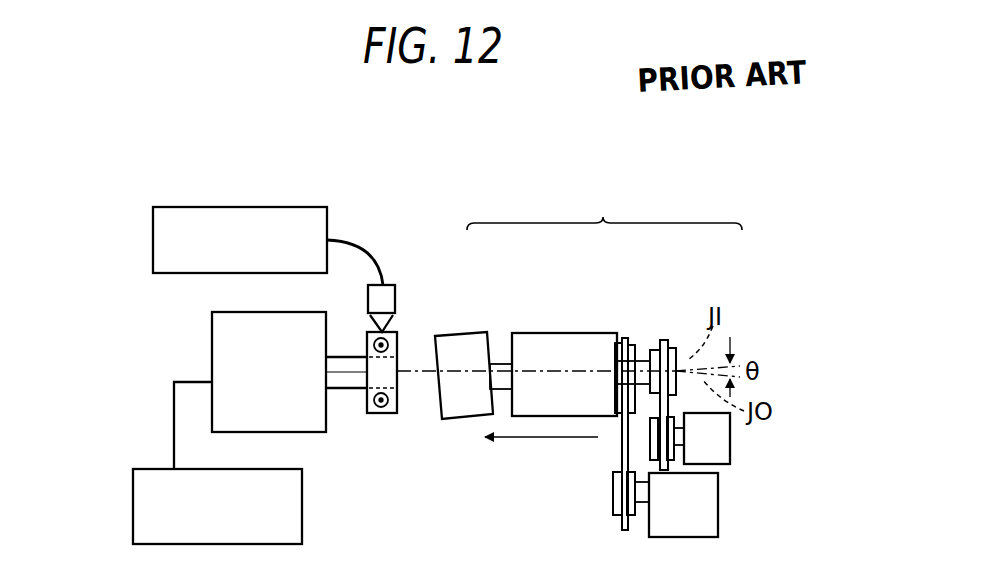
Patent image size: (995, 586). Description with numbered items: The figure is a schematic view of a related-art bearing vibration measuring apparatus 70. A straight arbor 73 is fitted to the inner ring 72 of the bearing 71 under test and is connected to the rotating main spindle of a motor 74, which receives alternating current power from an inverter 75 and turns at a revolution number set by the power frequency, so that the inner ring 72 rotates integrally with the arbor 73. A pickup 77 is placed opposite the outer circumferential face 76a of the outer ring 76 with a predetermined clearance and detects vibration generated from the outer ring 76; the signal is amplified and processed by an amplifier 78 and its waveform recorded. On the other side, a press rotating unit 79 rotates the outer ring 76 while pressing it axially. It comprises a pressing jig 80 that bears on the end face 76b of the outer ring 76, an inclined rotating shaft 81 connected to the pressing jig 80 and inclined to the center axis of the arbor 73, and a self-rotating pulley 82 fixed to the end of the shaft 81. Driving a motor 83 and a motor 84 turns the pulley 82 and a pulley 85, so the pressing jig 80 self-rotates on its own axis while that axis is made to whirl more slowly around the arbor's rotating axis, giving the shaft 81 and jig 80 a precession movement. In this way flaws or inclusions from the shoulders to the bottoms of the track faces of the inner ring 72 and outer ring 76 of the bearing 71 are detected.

The bearing vibration measuring apparatus 70 is at (477, 143).
The bearing 71 is at (381, 416).
The inner ring 72 is at (400, 348).
The straight arbor 73 is at (343, 383).
The motor 74 is at (212, 340).
The inverter 75 is at (133, 508).
The outer ring 76 is at (378, 360).
The outer circumferential face 76a is at (367, 333).
The end face 76b is at (399, 392).
The pickup 77 is at (387, 285).
The amplifier 78 is at (283, 207).
The press rotating unit 79 is at (604, 208).
The pressing jig 80 is at (460, 337).
The inclined rotating shaft 81 is at (645, 360).
The self-rotating pulley 82 is at (660, 350).
The motor 83 is at (730, 445).
The motor 84 is at (718, 520).
The pulley 85 is at (627, 345).